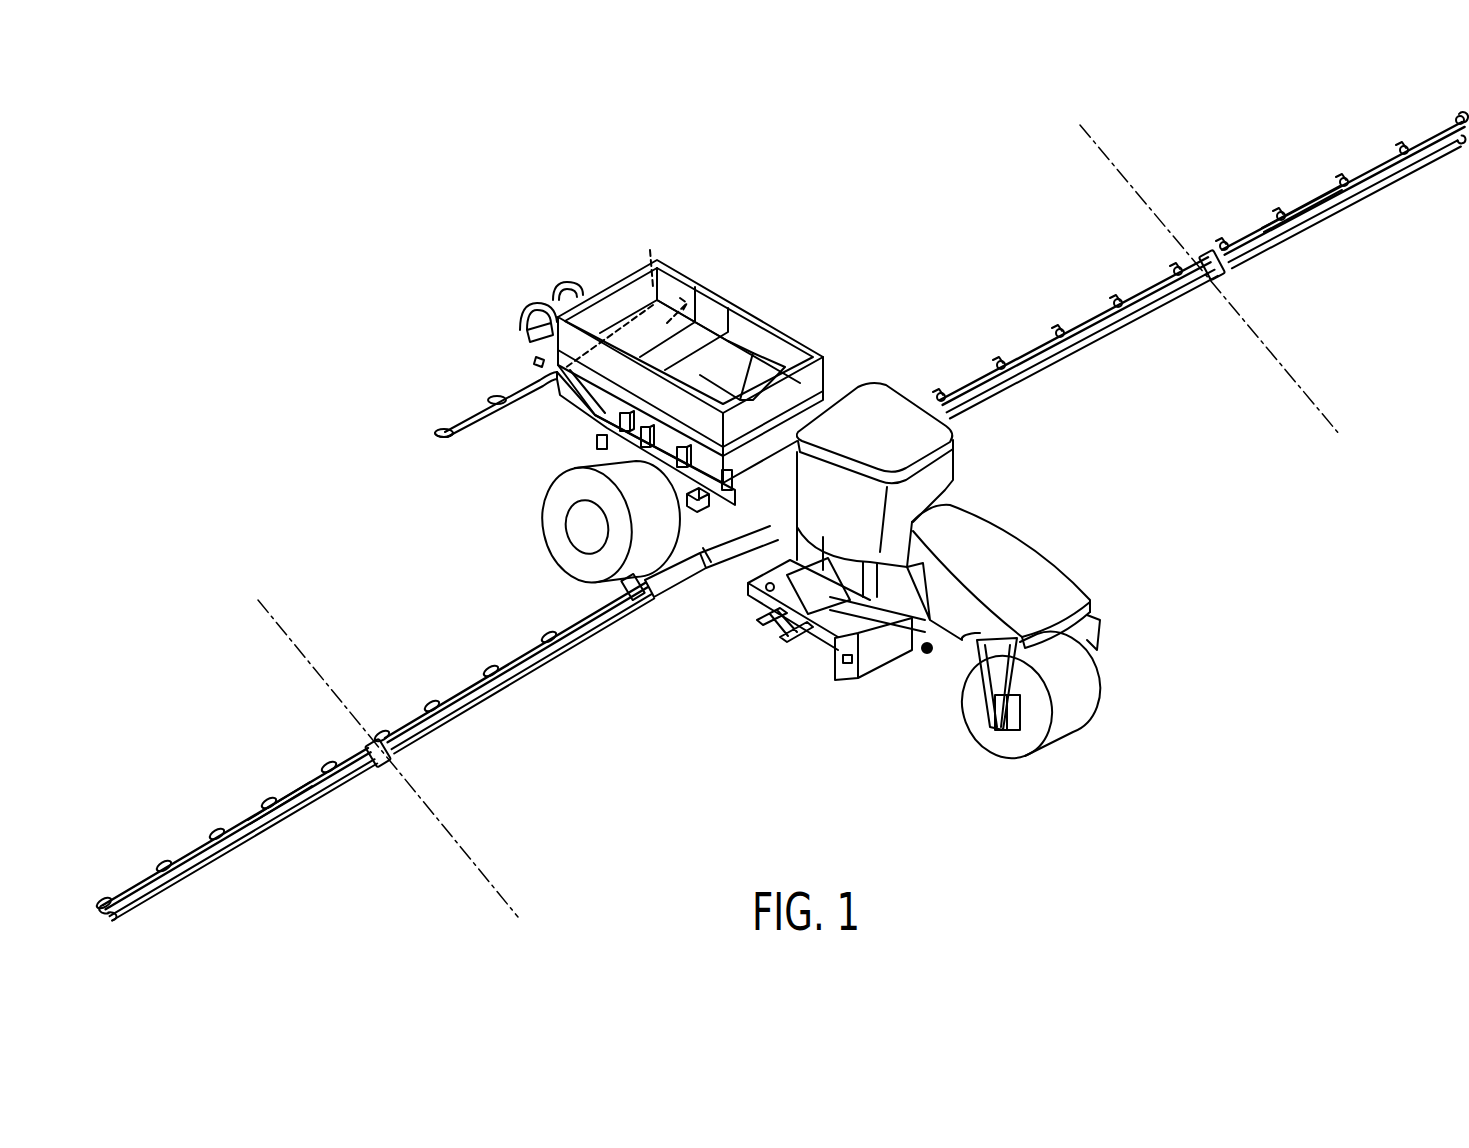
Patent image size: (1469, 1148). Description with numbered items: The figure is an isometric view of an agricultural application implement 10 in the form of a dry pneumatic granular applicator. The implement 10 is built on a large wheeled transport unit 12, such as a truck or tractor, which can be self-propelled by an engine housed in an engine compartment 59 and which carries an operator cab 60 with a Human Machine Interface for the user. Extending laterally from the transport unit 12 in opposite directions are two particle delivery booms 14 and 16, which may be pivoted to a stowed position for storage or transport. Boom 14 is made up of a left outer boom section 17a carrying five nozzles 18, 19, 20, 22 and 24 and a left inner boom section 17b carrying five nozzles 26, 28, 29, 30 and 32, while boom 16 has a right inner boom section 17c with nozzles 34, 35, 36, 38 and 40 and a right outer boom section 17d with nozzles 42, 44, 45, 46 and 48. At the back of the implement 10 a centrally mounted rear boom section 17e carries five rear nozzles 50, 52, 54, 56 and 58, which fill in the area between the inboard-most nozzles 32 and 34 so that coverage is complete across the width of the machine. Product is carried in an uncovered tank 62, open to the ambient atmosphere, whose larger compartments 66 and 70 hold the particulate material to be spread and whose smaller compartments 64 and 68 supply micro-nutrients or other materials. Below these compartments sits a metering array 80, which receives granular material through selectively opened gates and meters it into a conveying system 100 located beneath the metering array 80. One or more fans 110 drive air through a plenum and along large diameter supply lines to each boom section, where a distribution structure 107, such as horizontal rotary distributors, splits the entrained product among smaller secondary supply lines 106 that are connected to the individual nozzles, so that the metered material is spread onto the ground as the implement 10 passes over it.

The agricultural application implement 10 is at (838, 708).
The wheeled transport unit 12 is at (770, 646).
The particle delivery boom 14 is at (1192, 256).
The particle delivery boom 16 is at (374, 757).
The left outer boom section 17a is at (1372, 318).
The left inner boom section 17b is at (1190, 420).
The right inner boom section 17c is at (597, 768).
The right outer boom section 17d is at (357, 832).
The rear boom section 17e is at (433, 385).
The nozzle 18 is at (1456, 118).
The nozzle 19 is at (1401, 146).
The nozzle 20 is at (1341, 178).
The nozzle 22 is at (1278, 212).
The nozzle 24 is at (1221, 242).
The nozzle 26 is at (1175, 267).
The nozzle 28 is at (1115, 299).
The nozzle 29 is at (1057, 329).
The nozzle 30 is at (998, 361).
The nozzle 32 is at (938, 392).
The nozzle 34 is at (600, 596).
The nozzle 35 is at (547, 633).
The nozzle 36 is at (489, 667).
The nozzle 38 is at (430, 702).
The nozzle 40 is at (380, 732).
The nozzle 42 is at (327, 763).
The nozzle 44 is at (267, 799).
The nozzle 45 is at (215, 830).
The nozzle 46 is at (162, 862).
The nozzle 48 is at (104, 897).
The rear nozzle 50 is at (650, 250).
The rear nozzle 52 is at (647, 293).
The rear nozzle 54 is at (536, 360).
The rear nozzle 56 is at (488, 398).
The rear nozzle 58 is at (434, 434).
The engine compartment 59 is at (1020, 551).
The operator cab 60 is at (940, 475).
The uncovered tank 62 is at (770, 318).
The compartment 64 is at (680, 282).
The compartment 66 is at (712, 308).
The compartment 68 is at (752, 333).
The compartment 70 is at (688, 344).
The metering array 80 is at (593, 428).
The conveying system 100 is at (757, 245).
The secondary supply line 106 is at (1335, 222).
The distribution structure 107 is at (1206, 288).
The fan 110 is at (522, 308).